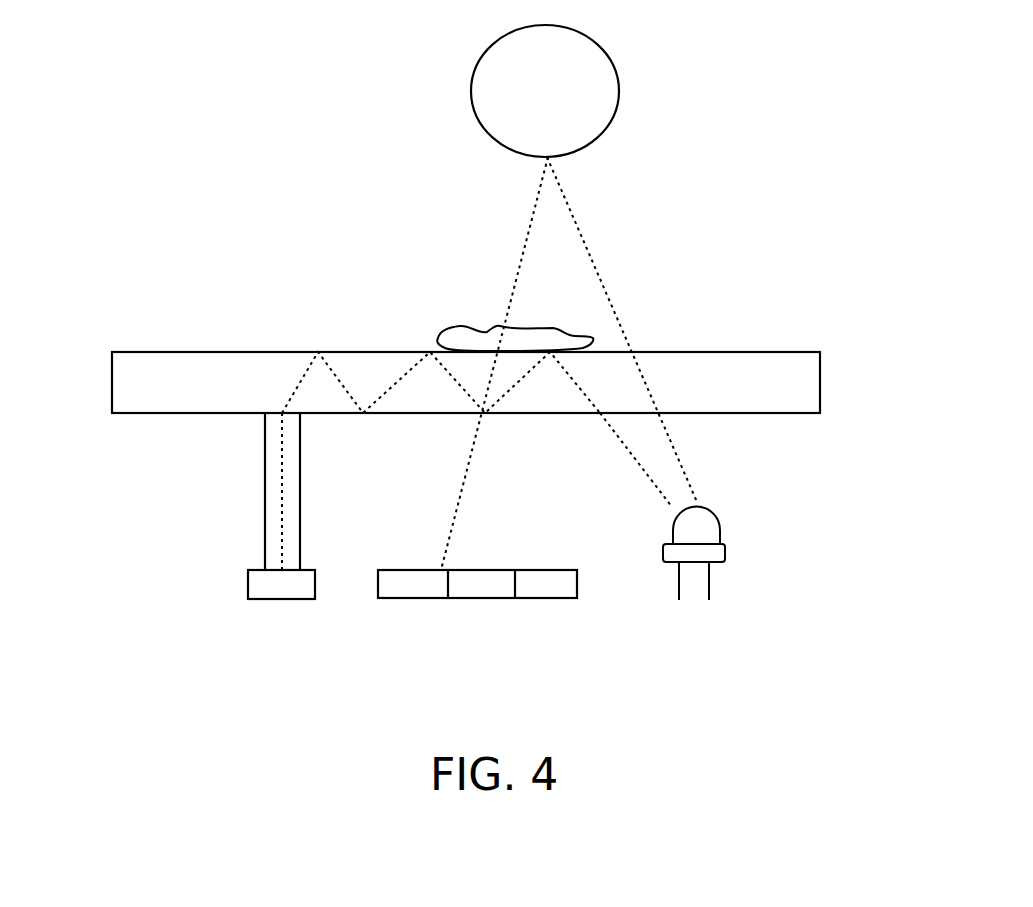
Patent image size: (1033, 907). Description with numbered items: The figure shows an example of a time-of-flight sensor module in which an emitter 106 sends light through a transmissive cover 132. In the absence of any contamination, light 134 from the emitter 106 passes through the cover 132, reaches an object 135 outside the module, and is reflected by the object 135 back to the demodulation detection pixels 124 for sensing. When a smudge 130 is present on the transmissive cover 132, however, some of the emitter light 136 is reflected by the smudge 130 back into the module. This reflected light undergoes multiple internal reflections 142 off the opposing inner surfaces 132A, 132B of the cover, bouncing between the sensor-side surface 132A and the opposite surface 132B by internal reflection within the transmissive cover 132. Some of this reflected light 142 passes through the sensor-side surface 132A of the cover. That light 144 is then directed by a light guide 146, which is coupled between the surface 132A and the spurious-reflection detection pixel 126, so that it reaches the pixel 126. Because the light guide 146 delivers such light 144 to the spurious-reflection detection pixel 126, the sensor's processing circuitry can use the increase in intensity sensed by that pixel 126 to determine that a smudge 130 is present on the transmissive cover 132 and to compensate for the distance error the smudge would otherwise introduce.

The object 135 is at (620, 98).
The smudge 130 is at (553, 327).
The transmissive cover 132 is at (778, 362).
The sensor-side surface 132A is at (165, 413).
The opposing inner surface 132B is at (172, 352).
The internal reflections 142 is at (392, 385).
The light 144 is at (282, 472).
The light guide 146 is at (265, 544).
The spurious-reflection detection pixel 126 is at (298, 599).
The demodulation detection pixels 124 is at (484, 598).
The emitter light 136 is at (627, 452).
The light 134 is at (683, 470).
The emitter 106 is at (722, 538).